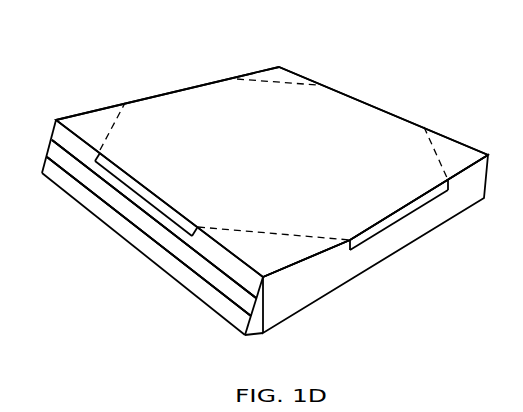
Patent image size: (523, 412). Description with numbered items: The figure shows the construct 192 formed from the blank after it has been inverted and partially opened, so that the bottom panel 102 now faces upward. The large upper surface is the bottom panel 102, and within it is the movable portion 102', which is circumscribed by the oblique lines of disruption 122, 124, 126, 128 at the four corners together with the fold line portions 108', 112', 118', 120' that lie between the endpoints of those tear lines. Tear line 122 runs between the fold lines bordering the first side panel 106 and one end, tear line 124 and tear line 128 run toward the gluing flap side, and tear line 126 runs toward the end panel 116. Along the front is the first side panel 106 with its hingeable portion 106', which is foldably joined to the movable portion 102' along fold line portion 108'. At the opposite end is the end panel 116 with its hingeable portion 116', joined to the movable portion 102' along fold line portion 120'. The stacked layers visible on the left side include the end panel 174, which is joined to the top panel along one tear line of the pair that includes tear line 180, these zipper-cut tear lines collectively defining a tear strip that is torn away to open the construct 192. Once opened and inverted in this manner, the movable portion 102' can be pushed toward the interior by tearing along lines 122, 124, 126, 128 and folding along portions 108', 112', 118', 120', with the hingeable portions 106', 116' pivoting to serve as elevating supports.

The movable portion 102' is at (272, 172).
The first major panel 102 is at (301, 258).
The first side panel 106 is at (375, 244).
The hingeable portion 106' is at (367, 245).
The fold line portion 108' is at (419, 202).
The fold line portion 112' is at (167, 85).
The fold line portion 118' is at (383, 111).
The fold line portion 120' is at (146, 194).
The oblique line of disruption 122 is at (426, 134).
The oblique line of disruption 124 is at (303, 84).
The oblique line of disruption 126 is at (265, 231).
The oblique line of disruption 128 is at (124, 104).
The end panel 116 is at (152, 229).
The hingeable portion 116' is at (151, 228).
The end panel 174 is at (67, 158).
The tear line 180 is at (190, 272).
The construct 192 is at (440, 58).